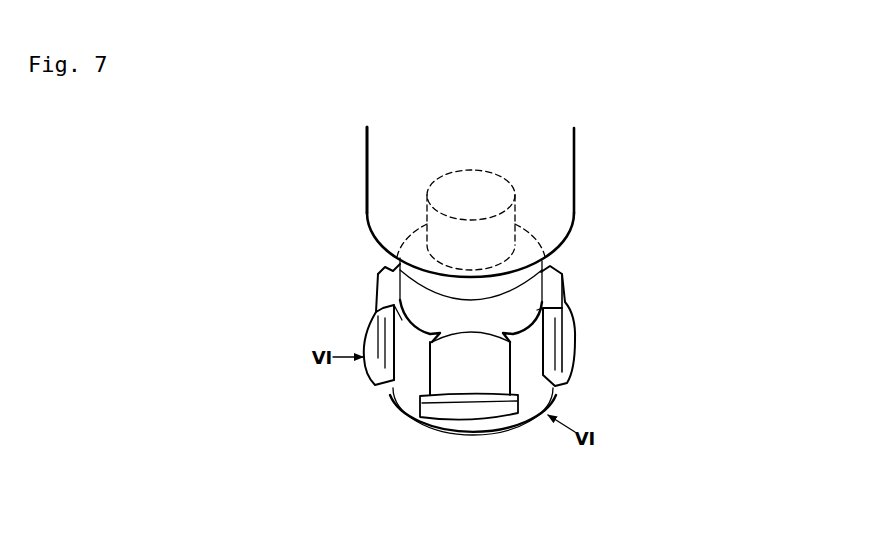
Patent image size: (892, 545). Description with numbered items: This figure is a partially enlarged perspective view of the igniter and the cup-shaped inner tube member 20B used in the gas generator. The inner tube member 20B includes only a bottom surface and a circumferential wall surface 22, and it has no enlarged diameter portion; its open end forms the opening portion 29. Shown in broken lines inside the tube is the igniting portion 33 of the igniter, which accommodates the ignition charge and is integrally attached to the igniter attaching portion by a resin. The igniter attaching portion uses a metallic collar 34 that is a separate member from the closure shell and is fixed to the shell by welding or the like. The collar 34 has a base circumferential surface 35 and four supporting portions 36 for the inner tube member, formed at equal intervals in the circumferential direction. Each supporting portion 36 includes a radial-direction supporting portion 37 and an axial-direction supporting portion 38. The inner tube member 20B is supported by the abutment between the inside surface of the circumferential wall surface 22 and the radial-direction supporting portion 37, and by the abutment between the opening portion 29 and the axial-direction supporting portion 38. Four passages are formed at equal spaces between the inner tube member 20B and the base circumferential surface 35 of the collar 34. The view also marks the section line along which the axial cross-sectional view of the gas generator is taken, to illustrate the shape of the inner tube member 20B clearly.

The inner tube member 20B is at (366, 149).
The circumferential wall surface 22 is at (553, 162).
The opening portion 29 is at (570, 235).
The igniting portion 33 is at (468, 166).
The collar 34 is at (374, 272).
The base circumferential surface 35 is at (532, 367).
The supporting portion 36 is at (434, 407).
The radial-direction supporting portion 37 is at (440, 370).
The axial-direction supporting portion 38 is at (466, 406).